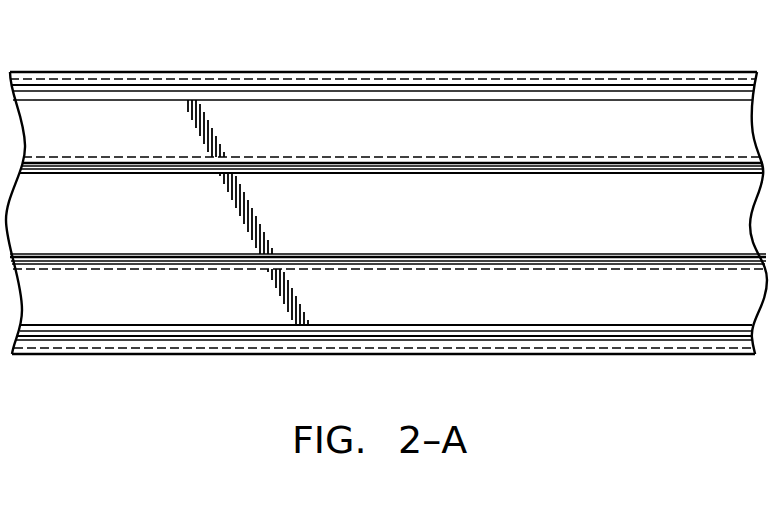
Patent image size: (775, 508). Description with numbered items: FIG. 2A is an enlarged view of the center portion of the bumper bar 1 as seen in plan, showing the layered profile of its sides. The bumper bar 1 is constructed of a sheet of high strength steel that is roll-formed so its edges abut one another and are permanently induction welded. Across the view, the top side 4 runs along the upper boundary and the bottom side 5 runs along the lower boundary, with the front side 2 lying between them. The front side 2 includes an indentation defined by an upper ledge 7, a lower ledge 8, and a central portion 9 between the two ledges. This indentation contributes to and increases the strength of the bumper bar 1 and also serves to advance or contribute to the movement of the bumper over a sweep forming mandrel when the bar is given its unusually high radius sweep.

The bumper bar 1 is at (440, 72).
The front side 2 is at (530, 128).
The top side 4 is at (609, 72).
The bottom side 5 is at (594, 342).
The upper ledge 7 is at (447, 170).
The lower ledge 8 is at (492, 256).
The central portion 9 is at (638, 212).